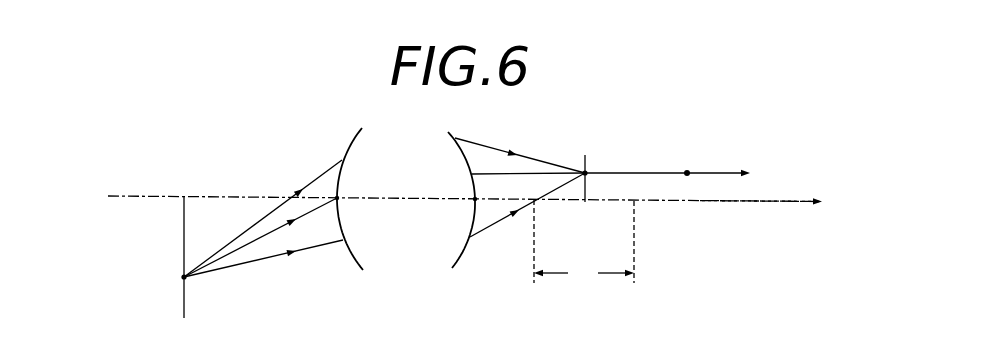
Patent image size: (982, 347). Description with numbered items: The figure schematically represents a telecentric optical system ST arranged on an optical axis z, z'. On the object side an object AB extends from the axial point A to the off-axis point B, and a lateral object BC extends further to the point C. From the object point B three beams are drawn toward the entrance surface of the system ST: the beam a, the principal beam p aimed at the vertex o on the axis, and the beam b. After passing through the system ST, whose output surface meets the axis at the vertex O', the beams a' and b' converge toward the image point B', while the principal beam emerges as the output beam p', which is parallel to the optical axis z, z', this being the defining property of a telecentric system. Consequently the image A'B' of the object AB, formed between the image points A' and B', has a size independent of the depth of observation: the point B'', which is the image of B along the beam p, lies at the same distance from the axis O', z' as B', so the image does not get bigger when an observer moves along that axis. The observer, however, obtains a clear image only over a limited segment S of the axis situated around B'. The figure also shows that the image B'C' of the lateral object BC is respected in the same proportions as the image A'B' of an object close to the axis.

The optical axis z is at (455, 192).
The optical axis z' is at (775, 199).
The object point A is at (184, 205).
The object point B is at (171, 266).
The object point C is at (185, 318).
The beam a is at (263, 218).
The principal beam p is at (260, 237).
The beam b is at (263, 262).
The vertex o is at (349, 199).
The telecentric optical system ST is at (433, 210).
The vertex O' is at (457, 190).
The output beam a' is at (520, 149).
The output beam b' is at (527, 208).
The image point C' is at (586, 151).
The image point B' is at (542, 186).
The image point A' is at (586, 203).
The output principal beam p' is at (667, 160).
The image point B'' is at (690, 159).
The segment S is at (584, 244).